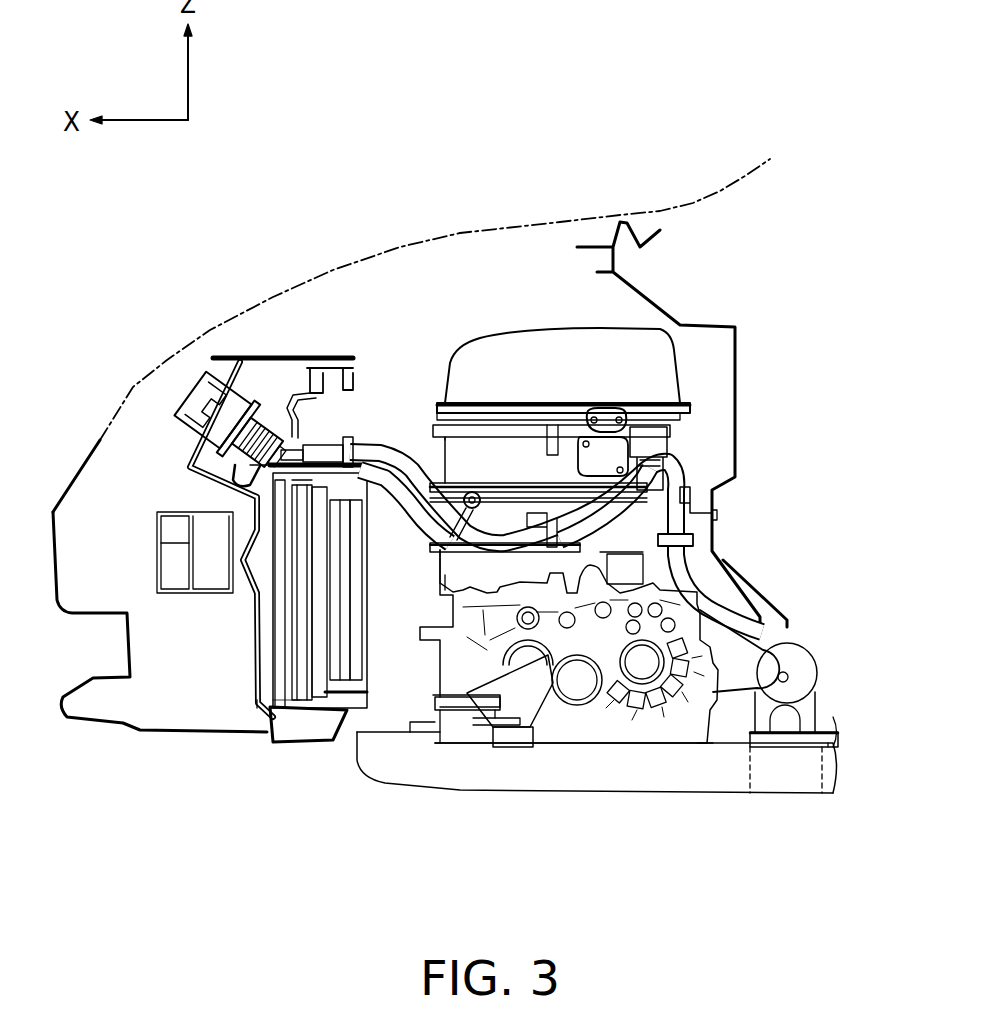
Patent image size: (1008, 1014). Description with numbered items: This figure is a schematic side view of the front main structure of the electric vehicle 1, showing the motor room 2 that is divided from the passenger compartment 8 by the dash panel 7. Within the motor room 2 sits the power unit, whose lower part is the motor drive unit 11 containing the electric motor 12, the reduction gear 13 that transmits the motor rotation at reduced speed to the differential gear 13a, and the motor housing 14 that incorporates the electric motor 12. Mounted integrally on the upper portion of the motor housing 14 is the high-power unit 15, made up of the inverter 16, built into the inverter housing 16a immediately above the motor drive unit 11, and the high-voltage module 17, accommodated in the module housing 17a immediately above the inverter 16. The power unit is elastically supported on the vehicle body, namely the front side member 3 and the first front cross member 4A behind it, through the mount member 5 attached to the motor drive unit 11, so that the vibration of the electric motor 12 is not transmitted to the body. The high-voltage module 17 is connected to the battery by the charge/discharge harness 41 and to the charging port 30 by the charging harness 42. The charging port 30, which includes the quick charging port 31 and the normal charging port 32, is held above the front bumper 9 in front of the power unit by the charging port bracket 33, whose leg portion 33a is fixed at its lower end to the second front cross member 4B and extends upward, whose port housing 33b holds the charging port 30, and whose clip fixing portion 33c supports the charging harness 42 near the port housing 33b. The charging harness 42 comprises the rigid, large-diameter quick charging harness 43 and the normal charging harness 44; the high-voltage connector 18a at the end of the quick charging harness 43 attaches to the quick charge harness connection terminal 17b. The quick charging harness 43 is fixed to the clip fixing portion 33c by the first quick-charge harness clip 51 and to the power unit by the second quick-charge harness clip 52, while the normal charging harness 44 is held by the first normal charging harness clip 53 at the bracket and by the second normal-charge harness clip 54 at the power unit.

The electric vehicle 1 is at (703, 186).
The motor room 2 is at (463, 312).
The front side member 3 is at (750, 783).
The first front cross member 4A is at (830, 797).
The second front cross member 4B is at (307, 743).
The mount member 5 is at (750, 665).
The dash panel 7 is at (708, 327).
The passenger compartment 8 is at (872, 305).
The front bumper 9 is at (117, 613).
The motor drive unit 11 is at (635, 743).
The electric motor 12 is at (663, 743).
The reduction gear 13 is at (540, 753).
The differential gear 13a is at (580, 690).
The motor housing 14 is at (723, 740).
The high-power unit 15 is at (616, 410).
The inverter 16 is at (616, 431).
The inverter housing 16a is at (712, 515).
The high-voltage module 17 is at (620, 334).
The module housing 17a is at (676, 362).
The quick charge harness connection terminal 17b is at (672, 426).
The high-voltage connector 18a is at (660, 443).
The charging port 30 is at (236, 385).
The quick charging port 31 is at (236, 385).
The normal charging port 32 is at (195, 393).
The charging port bracket 33 is at (242, 600).
The leg portion 33a is at (253, 640).
The port housing 33b is at (190, 468).
The clip fixing portion 33c is at (340, 477).
The charge/discharge harness 41 is at (737, 607).
The charging harness 42 is at (556, 457).
The quick charging harness 43 is at (385, 437).
The normal charging harness 44 is at (400, 463).
The first quick-charge harness clip 51 is at (340, 440).
The second quick-charge harness clip 52 is at (453, 567).
The first normal charging harness clip 53 is at (340, 477).
The second normal-charge harness clip 54 is at (460, 540).